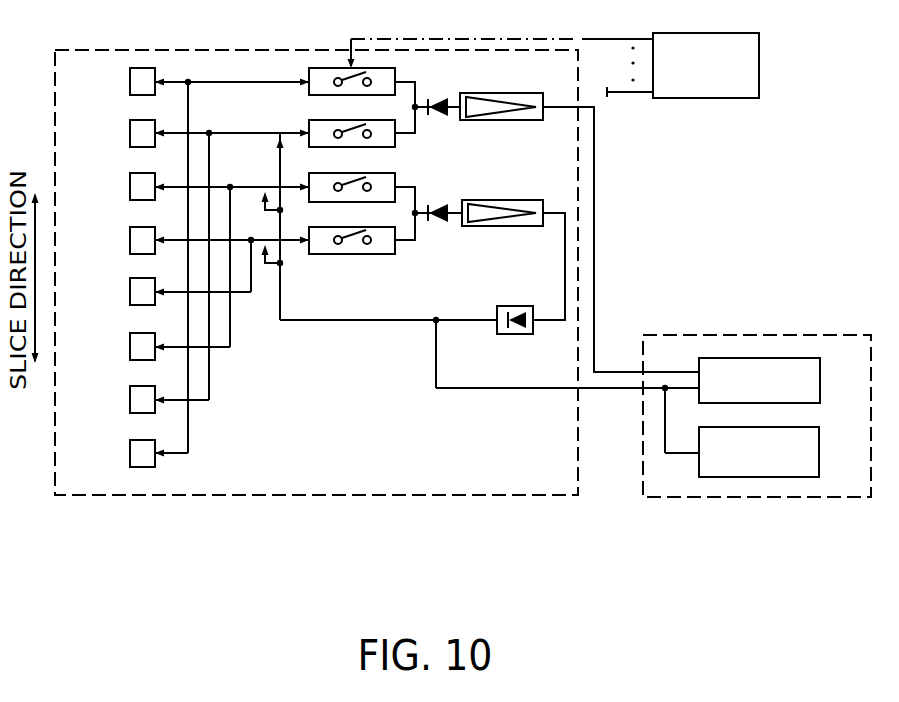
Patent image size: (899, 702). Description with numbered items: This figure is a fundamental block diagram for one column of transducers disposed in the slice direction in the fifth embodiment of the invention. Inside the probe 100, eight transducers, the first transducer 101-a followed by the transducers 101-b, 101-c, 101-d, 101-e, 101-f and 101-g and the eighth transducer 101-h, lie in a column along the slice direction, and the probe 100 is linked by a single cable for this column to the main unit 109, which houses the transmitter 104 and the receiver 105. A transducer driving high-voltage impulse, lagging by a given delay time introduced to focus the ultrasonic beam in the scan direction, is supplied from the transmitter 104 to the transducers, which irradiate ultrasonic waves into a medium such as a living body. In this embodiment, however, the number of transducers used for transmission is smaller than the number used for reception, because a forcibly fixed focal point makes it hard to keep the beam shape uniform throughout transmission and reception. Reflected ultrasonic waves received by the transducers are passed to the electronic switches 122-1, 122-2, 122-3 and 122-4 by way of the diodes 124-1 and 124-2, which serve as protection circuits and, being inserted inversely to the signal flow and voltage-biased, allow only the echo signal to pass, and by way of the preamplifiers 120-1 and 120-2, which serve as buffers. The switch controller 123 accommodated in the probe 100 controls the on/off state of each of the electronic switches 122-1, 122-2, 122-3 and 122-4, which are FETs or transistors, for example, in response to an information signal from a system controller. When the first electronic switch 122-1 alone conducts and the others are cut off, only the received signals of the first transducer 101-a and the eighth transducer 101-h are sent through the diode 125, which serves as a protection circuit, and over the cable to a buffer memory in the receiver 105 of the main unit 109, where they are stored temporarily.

The first transducer 101-a is at (131, 82).
The transducer 101-b is at (131, 133).
The transducer 101-c is at (131, 187).
The transducer 101-d is at (131, 240).
The transducer 101-e is at (131, 292).
The transducer 101-f is at (131, 347).
The transducer 101-g is at (131, 400).
The eighth transducer 101-h is at (131, 453).
The electronic switch 122-1 is at (309, 73).
The electronic switch 122-2 is at (309, 120).
The electronic switch 122-3 is at (393, 181).
The electronic switch 122-4 is at (378, 254).
The diode 124-1 is at (446, 80).
The diode 124-2 is at (440, 224).
The preamplifier 120-1 is at (530, 82).
The preamplifier 120-2 is at (530, 188).
The diode 125 is at (530, 293).
The switch controller 123 is at (733, 99).
The main unit 109 is at (672, 329).
The receiver 105 is at (820, 378).
The transmitter 104 is at (819, 450).
The probe 100 is at (467, 496).